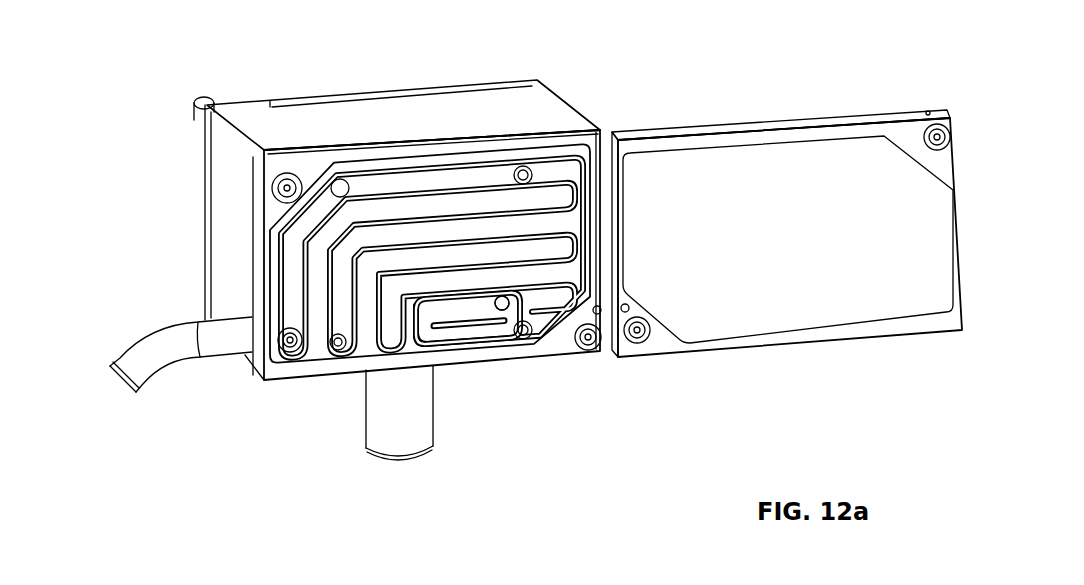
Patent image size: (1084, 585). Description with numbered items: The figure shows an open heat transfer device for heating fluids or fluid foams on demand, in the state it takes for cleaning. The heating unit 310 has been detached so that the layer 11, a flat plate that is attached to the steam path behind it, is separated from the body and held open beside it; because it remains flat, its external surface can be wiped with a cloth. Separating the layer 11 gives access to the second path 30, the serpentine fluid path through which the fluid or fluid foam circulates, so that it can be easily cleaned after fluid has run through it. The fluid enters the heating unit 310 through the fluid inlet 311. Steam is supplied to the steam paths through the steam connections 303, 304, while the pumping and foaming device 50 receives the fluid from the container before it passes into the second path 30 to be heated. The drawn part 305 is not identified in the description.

The layer 11 is at (733, 165).
The second path 30 is at (413, 258).
The pumping and foaming device 50 is at (255, 130).
The steam connection 303 is at (203, 103).
The steam connection 304 is at (590, 342).
The cable 305 is at (152, 347).
The heating unit 310 is at (667, 135).
The fluid inlet 311 is at (505, 306).